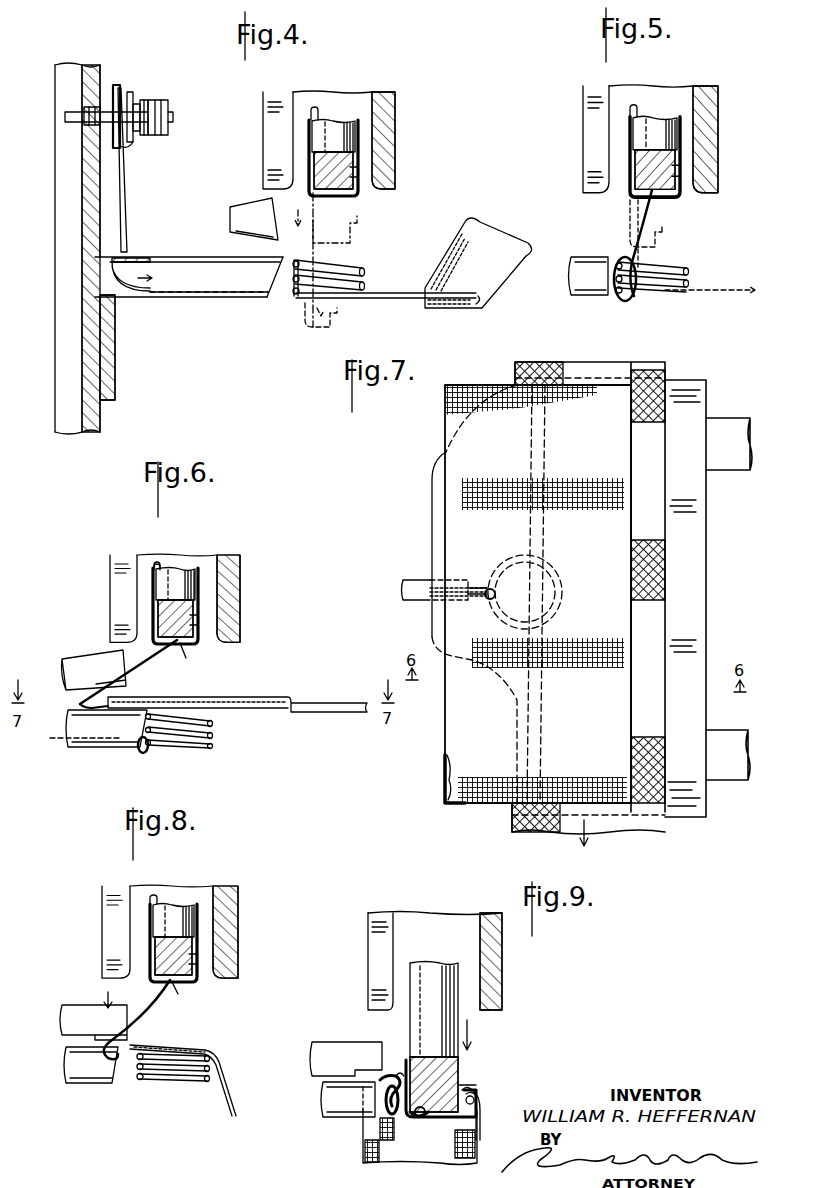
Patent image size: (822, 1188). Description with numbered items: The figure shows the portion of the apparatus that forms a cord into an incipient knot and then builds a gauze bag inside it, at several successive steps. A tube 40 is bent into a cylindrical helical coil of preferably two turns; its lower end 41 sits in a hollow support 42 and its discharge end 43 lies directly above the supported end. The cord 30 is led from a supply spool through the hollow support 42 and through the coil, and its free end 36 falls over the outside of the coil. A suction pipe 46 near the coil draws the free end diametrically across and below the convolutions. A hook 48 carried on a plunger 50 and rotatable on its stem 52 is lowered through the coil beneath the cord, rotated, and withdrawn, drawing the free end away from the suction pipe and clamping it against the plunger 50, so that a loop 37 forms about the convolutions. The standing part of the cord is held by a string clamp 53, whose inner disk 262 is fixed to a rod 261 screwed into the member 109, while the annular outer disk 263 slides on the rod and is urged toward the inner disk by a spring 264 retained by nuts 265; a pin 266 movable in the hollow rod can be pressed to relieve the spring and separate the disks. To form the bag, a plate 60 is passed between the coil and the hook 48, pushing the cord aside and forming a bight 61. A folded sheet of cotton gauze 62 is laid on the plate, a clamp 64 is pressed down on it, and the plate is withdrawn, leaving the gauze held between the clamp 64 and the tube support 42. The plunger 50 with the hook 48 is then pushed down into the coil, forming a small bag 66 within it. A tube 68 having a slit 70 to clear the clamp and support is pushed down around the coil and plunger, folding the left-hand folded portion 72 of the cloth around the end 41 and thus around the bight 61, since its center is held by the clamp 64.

In FIG. 4, the member 109 is at (65, 247).
In FIG. 4, the pin 266 is at (66, 120).
In FIG. 4, the inner disk 262 is at (112, 150).
In FIG. 4, the string clamp 53 is at (138, 91).
In FIG. 4, the spring 264 is at (135, 101).
In FIG. 4, the nuts 265 is at (146, 126).
In FIG. 4, the rod 261 is at (170, 108).
In FIG. 4, the outer disk 263 is at (124, 147).
In FIG. 4, the cord 30 is at (125, 256).
In FIG. 4, the support 42 is at (172, 300).
In FIG. 5, the support 42 is at (590, 257).
In FIG. 6, the support 42 is at (88, 750).
In FIG. 7, the support 42 is at (408, 580).
In FIG. 8, the support 42 is at (78, 1086).
In FIG. 9, the support 42 is at (330, 1120).
In FIG. 4, the lower end of the tube 41 is at (276, 300).
In FIG. 4, the discharge end 43 is at (295, 258).
In FIG. 4, the tube 40 is at (366, 274).
In FIG. 5, the tube 40 is at (689, 270).
In FIG. 6, the tube 40 is at (214, 740).
In FIG. 7, the tube 40 is at (556, 582).
In FIG. 8, the tube 40 is at (186, 1082).
In FIG. 4, the suction pipe 46 is at (493, 238).
In FIG. 4, the clamp 64 is at (228, 214).
In FIG. 6, the clamp 64 is at (87, 652).
In FIG. 8, the clamp 64 is at (94, 1004).
In FIG. 9, the clamp 64 is at (352, 1042).
In FIG. 4, the hook 48 is at (356, 183).
In FIG. 5, the hook 48 is at (680, 185).
In FIG. 6, the hook 48 is at (200, 632).
In FIG. 8, the hook 48 is at (198, 970).
In FIG. 9, the hook 48 is at (462, 1094).
In FIG. 4, the plunger 50 is at (328, 125).
In FIG. 5, the plunger 50 is at (655, 122).
In FIG. 6, the plunger 50 is at (184, 582).
In FIG. 8, the plunger 50 is at (178, 910).
In FIG. 9, the plunger 50 is at (430, 976).
In FIG. 4, the stem 52 is at (309, 108).
In FIG. 5, the stem 52 is at (618, 106).
In FIG. 6, the stem 52 is at (150, 566).
In FIG. 8, the stem 52 is at (146, 898).
In FIG. 4, the tube 68 is at (395, 120).
In FIG. 5, the tube 68 is at (718, 134).
In FIG. 6, the tube 68 is at (239, 592).
In FIG. 8, the tube 68 is at (242, 917).
In FIG. 9, the tube 68 is at (502, 956).
In FIG. 4, the slit 70 is at (263, 140).
In FIG. 5, the slit 70 is at (582, 133).
In FIG. 6, the slit 70 is at (110, 590).
In FIG. 8, the slit 70 is at (102, 916).
In FIG. 9, the slit 70 is at (368, 957).
In FIG. 5, the free end 36 is at (658, 213).
In FIG. 6, the free end 36 is at (190, 657).
In FIG. 8, the free end 36 is at (180, 993).
In FIG. 5, the loop 37 is at (631, 297).
In FIG. 6, the loop 37 is at (147, 753).
In FIG. 7, the loop 37 is at (484, 600).
In FIG. 9, the loop 37 is at (392, 1118).
In FIG. 6, the plate 60 is at (258, 712).
In FIG. 7, the plate 60 is at (432, 514).
In FIG. 6, the bight 61 is at (78, 704).
In FIG. 7, the bight 61 is at (430, 598).
In FIG. 9, the bight 61 is at (394, 1074).
In FIG. 7, the sheet of cotton gauze 62 is at (444, 460).
In FIG. 8, the sheet of cotton gauze 62 is at (226, 1084).
In FIG. 9, the sheet of cotton gauze 62 is at (480, 1108).
In FIG. 9, the bag 66 is at (422, 1120).
In FIG. 7, the left-hand folded portion 72 is at (446, 728).